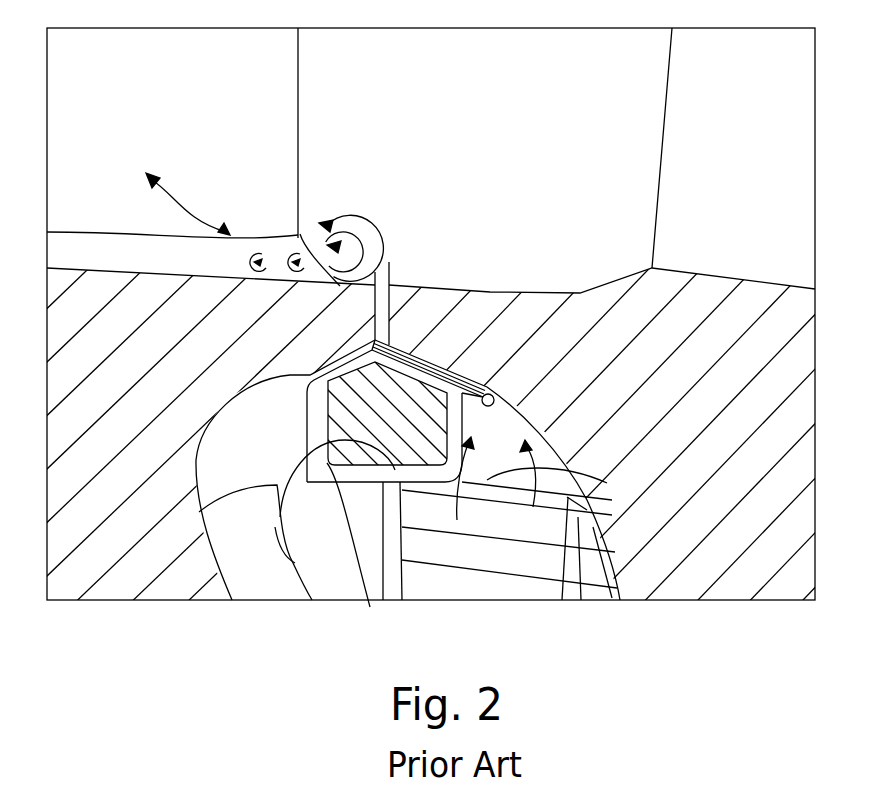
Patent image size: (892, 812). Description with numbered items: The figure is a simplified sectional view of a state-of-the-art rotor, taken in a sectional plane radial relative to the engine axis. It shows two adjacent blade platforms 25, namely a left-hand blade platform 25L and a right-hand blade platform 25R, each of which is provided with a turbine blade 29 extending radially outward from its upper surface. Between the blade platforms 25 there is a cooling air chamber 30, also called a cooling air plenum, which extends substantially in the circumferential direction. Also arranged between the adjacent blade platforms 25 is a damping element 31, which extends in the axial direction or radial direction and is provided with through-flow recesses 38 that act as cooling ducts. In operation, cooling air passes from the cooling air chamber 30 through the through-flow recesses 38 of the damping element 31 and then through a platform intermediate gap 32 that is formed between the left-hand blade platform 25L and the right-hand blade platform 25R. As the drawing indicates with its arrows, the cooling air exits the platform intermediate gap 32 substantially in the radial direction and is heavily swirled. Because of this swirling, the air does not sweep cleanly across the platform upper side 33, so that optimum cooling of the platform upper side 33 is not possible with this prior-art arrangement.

The blade platform 25 is at (527, 303).
The left-hand blade platform 25L is at (184, 372).
The right-hand blade platform 25R is at (728, 450).
The turbine blade 29 is at (275, 73).
The cooling air chamber 30 is at (560, 600).
The damping element 31 is at (372, 600).
The platform intermediate gap 32 is at (378, 272).
The platform upper side 33 is at (484, 290).
The through-flow recess 38 is at (407, 343).